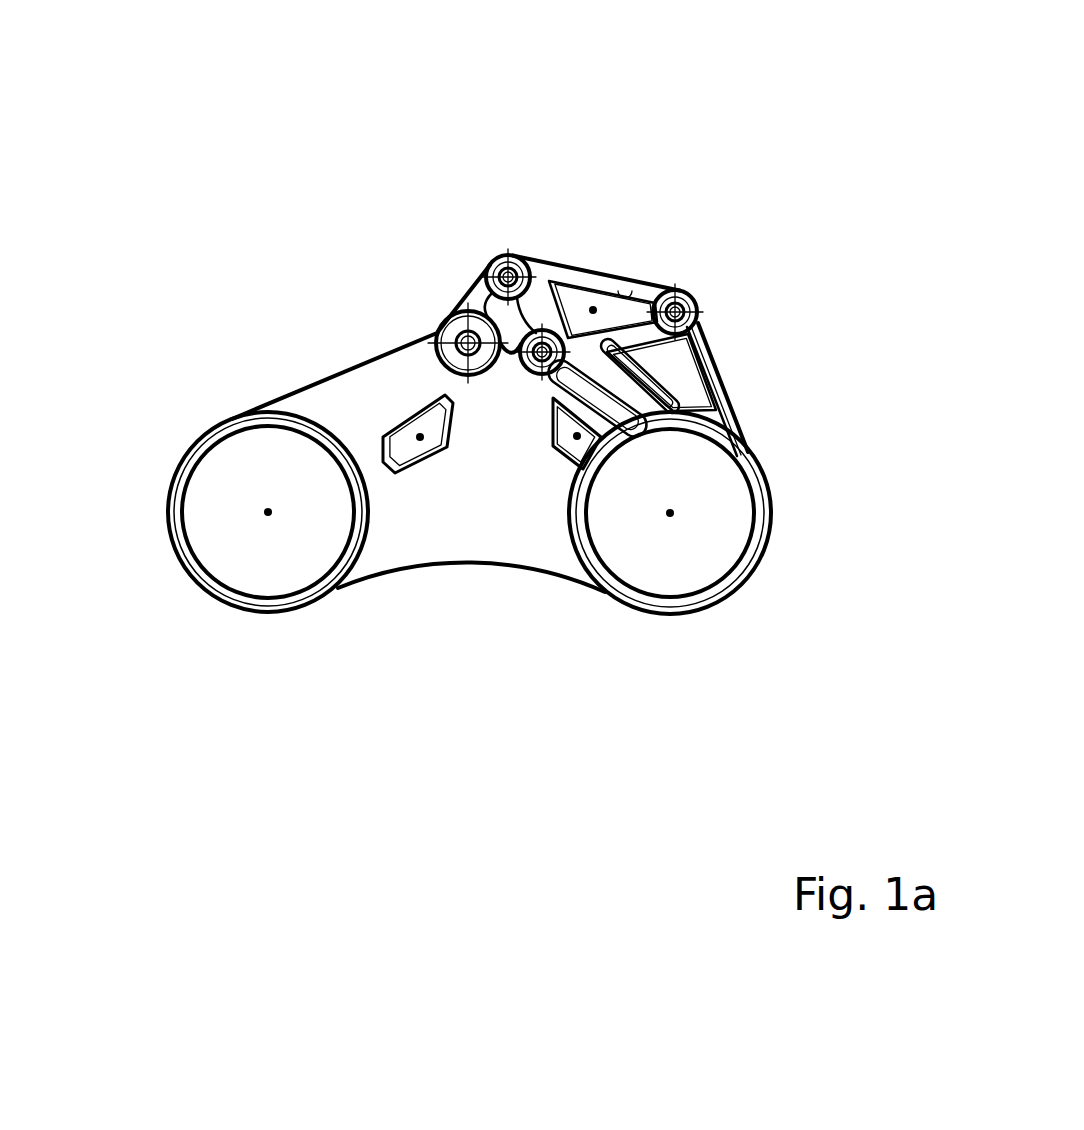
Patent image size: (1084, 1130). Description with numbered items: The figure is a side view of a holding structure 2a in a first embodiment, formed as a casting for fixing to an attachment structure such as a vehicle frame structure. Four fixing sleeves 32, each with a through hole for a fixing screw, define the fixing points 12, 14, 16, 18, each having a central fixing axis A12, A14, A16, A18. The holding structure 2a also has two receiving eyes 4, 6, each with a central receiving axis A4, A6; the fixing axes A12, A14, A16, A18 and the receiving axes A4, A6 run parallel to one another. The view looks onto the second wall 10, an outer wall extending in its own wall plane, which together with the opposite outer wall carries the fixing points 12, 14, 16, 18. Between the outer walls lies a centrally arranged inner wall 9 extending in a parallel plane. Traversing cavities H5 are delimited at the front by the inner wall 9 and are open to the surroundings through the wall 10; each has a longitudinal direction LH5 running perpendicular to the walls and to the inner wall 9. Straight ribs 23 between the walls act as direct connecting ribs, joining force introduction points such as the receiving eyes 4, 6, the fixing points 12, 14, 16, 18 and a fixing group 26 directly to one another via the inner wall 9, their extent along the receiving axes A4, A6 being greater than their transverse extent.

The holding structure 2a is at (283, 393).
The receiving eye 4 is at (205, 565).
The receiving axis A4 is at (268, 516).
The receiving eye 6 is at (712, 570).
The receiving axis A6 is at (670, 517).
The inner wall 9 is at (683, 398).
The second wall 10 is at (487, 542).
The fixing point 12 is at (447, 313).
The fixing axis A12 is at (458, 350).
The fixing point 14 is at (492, 257).
The fixing axis A14 is at (495, 266).
The fixing point 16 is at (548, 332).
The fixing axis A16 is at (593, 310).
The fixing point 18 is at (698, 300).
The fixing axis A18 is at (702, 310).
The rib 23 is at (703, 350).
The fixing group 26 is at (512, 380).
The fixing sleeve 32 is at (437, 356).
The traversing cavity H5 is at (431, 456).
The longitudinal direction LH5 is at (420, 441).